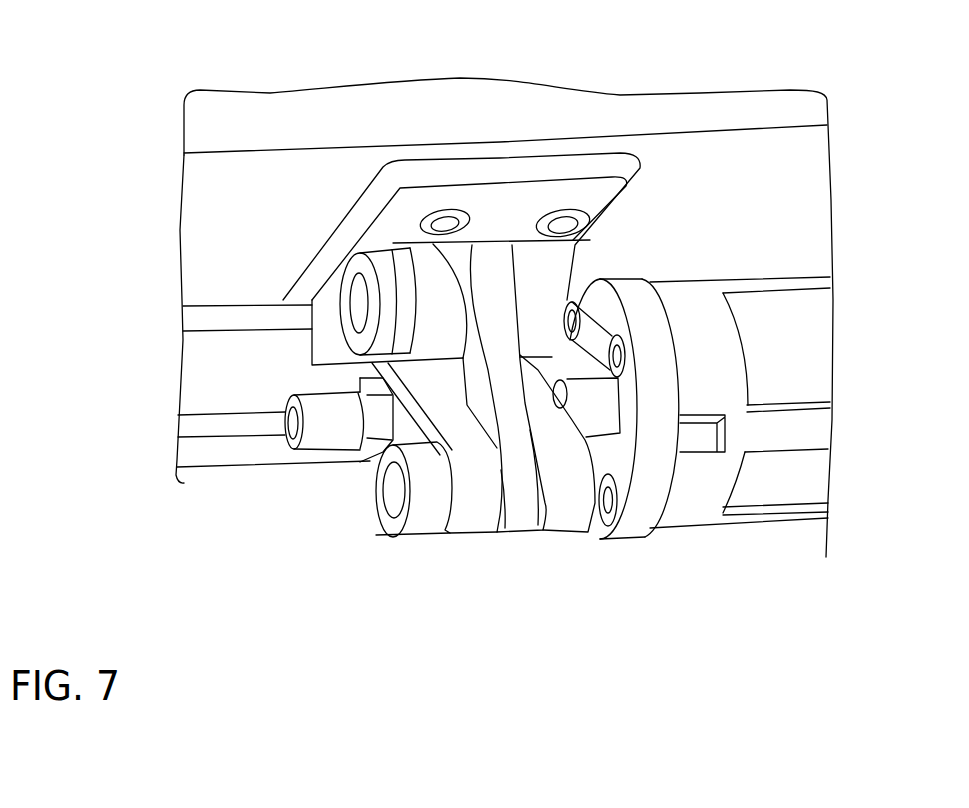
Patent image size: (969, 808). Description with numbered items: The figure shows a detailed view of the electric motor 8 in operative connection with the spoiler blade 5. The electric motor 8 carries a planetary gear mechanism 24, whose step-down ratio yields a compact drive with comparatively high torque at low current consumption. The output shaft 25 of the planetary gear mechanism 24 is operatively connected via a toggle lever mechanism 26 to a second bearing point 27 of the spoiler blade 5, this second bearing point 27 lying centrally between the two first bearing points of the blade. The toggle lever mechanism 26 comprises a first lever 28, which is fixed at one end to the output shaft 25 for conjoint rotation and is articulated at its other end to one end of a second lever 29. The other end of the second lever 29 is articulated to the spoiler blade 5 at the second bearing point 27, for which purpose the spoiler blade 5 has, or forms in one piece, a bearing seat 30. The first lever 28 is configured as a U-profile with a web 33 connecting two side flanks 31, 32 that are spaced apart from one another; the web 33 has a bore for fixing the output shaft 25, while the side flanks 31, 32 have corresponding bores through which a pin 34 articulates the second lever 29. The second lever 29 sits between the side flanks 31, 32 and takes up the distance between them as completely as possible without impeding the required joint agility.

The spoiler blade 5 is at (477, 118).
The electric motor 8 is at (747, 443).
The planetary gear mechanism 24 is at (776, 512).
The output shaft 25 is at (328, 428).
The toggle lever mechanism 26 is at (504, 560).
The second bearing point 27 is at (553, 262).
The first lever 28 is at (345, 456).
The second lever 29 is at (494, 312).
The bearing seat 30 is at (443, 267).
The side flank 31 is at (465, 515).
The side flank 32 is at (562, 520).
The web 33 is at (432, 398).
The pin 34 is at (422, 493).